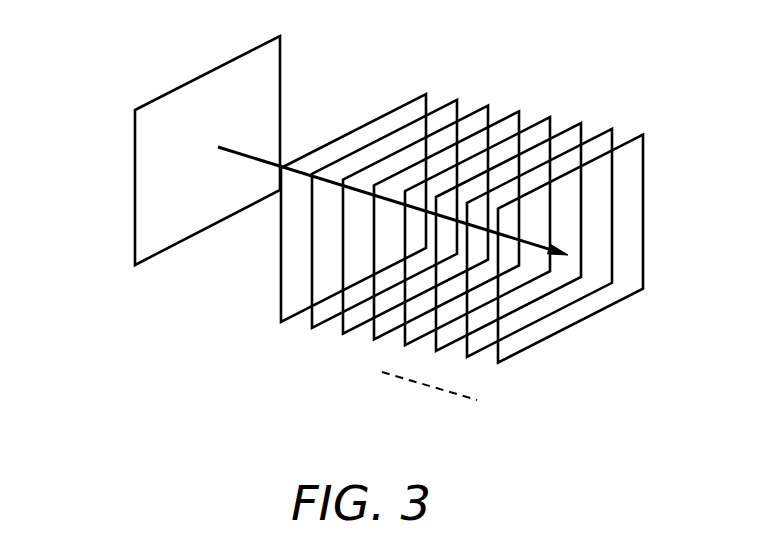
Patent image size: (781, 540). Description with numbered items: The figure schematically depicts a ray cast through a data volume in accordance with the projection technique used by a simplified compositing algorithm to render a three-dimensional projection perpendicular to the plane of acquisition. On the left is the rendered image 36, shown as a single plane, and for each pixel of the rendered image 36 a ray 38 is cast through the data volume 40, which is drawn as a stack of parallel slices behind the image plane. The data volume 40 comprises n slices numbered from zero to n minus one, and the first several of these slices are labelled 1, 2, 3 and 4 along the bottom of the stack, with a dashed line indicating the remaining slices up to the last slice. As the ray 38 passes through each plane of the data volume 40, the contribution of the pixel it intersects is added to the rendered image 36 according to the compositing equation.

The rendered image 36 is at (135, 208).
The ray 38 is at (303, 173).
The data volume 40 is at (511, 214).
The plate 1 is at (350, 224).
The plate 2 is at (379, 231).
The plate 3 is at (410, 239).
The plate 4 is at (442, 246).